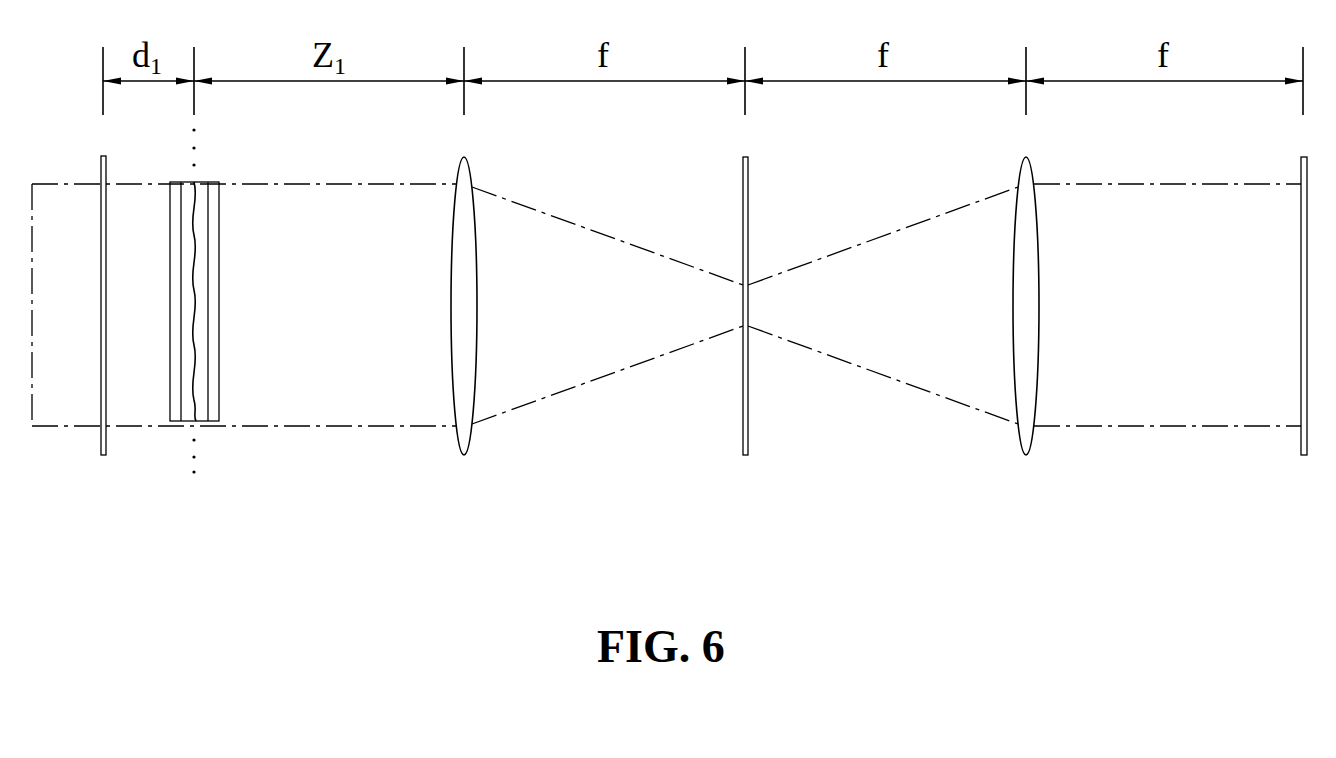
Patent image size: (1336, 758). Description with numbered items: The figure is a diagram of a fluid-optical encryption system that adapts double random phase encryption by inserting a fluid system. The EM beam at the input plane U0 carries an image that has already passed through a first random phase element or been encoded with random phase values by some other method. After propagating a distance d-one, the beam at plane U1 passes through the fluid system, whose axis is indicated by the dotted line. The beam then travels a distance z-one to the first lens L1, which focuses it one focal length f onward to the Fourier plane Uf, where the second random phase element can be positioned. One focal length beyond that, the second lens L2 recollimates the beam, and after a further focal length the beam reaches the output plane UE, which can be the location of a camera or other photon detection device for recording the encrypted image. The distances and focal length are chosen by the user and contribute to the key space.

The EM beam plane U0 is at (105, 340).
The beam plane at the fluid system U1 is at (194, 353).
The first lens L1 is at (466, 340).
The Fourier plane Uf is at (746, 340).
The second lens L2 is at (1026, 340).
The encrypted image plane UE is at (1303, 340).